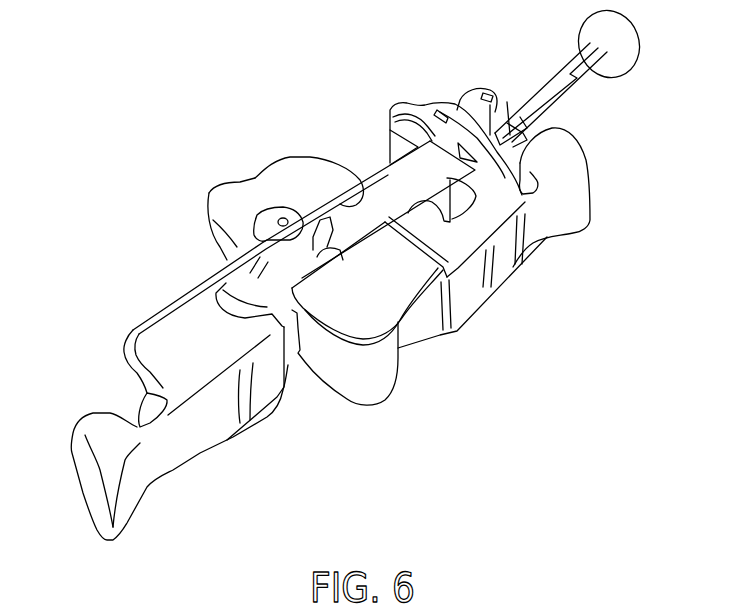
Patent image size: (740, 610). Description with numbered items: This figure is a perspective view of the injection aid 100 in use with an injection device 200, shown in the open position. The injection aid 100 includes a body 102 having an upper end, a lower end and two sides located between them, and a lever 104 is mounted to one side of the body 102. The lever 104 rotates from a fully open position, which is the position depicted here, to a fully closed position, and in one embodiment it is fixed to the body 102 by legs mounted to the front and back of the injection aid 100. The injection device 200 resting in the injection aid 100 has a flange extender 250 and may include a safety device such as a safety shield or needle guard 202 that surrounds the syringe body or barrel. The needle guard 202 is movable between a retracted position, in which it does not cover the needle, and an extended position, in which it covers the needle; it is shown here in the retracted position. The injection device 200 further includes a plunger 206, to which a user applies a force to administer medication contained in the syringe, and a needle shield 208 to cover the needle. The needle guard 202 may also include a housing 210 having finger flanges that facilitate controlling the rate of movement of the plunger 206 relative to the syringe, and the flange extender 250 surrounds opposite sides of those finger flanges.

The injection aid 100 is at (535, 280).
The body 102 is at (578, 205).
The lever 104 is at (90, 431).
The injection device 200 is at (378, 133).
The needle guard 202 is at (346, 212).
The plunger 206 is at (570, 82).
The needle shield 208 is at (240, 302).
The housing 210 is at (378, 187).
The flange extender 250 is at (408, 100).